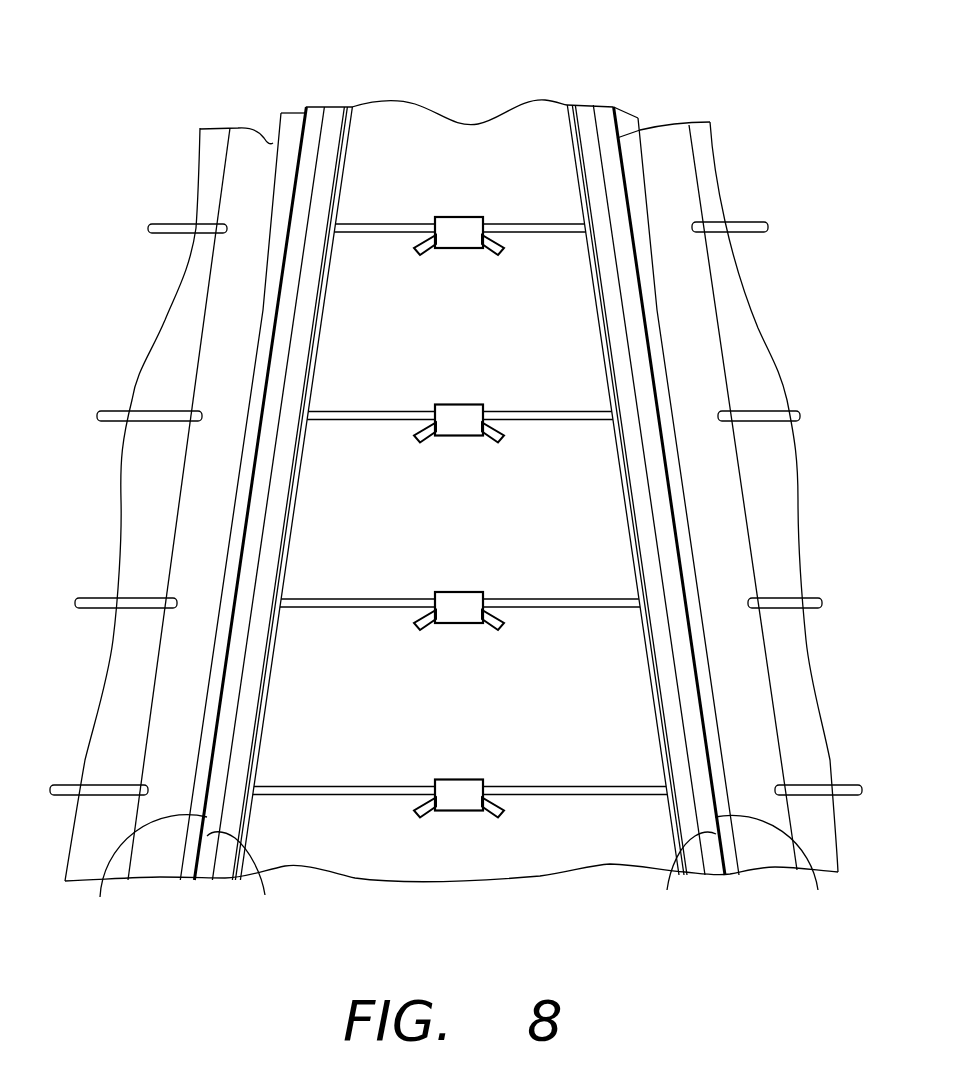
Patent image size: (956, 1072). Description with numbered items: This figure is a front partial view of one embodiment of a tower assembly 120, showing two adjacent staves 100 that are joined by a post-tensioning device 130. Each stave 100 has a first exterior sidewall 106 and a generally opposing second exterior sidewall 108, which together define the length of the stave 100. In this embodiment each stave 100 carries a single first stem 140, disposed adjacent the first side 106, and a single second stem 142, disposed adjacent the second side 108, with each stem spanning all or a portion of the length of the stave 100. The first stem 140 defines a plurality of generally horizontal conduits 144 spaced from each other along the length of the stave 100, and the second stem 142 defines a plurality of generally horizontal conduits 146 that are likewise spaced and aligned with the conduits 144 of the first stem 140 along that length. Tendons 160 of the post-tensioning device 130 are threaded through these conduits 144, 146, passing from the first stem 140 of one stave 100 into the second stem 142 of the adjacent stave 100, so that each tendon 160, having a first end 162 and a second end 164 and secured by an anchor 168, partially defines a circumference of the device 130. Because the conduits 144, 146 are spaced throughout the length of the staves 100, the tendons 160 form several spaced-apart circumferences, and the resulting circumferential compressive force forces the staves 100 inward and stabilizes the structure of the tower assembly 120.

The stave 100 is at (470, 88).
The first exterior sidewall 106 is at (526, 874).
The second exterior sidewall 108 is at (397, 874).
The tower assembly 120 is at (138, 110).
The post-tensioning device 130 is at (450, 204).
The first stem 140 is at (316, 120).
The second stem 142 is at (268, 148).
The conduit 144 is at (340, 220).
The conduit 146 is at (220, 216).
The tendon 160 is at (742, 222).
The first end 162 is at (420, 247).
The second end 164 is at (492, 252).
The anchor 168 is at (460, 250).